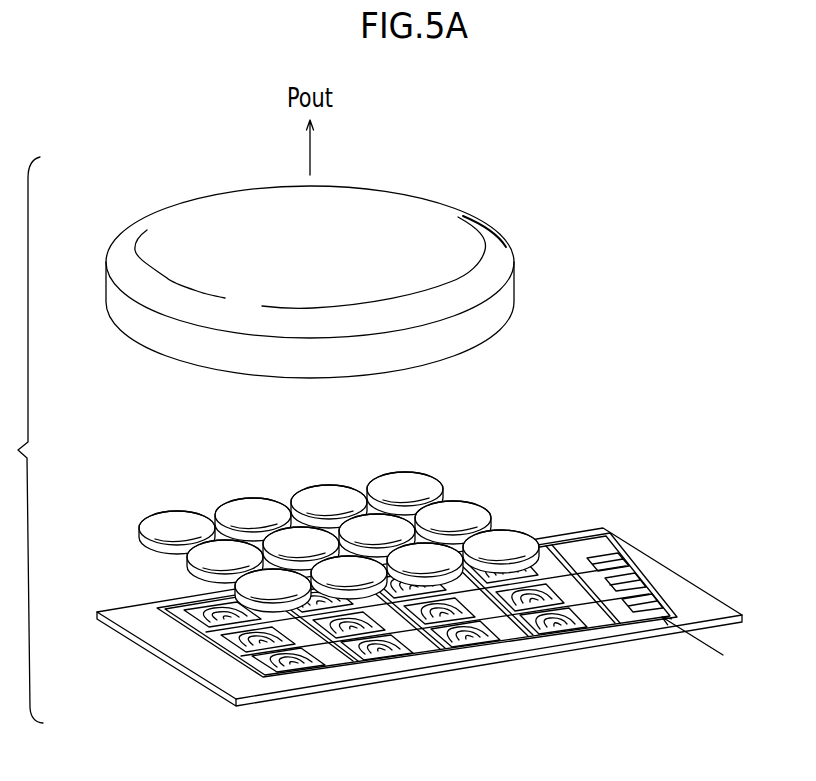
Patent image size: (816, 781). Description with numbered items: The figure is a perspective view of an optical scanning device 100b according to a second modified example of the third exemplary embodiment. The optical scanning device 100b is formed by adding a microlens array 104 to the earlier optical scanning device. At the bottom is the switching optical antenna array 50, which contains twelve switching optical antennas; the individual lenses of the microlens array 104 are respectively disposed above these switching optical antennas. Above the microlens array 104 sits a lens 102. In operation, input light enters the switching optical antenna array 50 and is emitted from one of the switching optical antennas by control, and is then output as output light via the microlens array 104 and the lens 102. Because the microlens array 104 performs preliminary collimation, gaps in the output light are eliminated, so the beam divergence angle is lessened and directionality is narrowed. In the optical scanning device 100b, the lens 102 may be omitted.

The optical scanning device 100b is at (613, 372).
The lens 102 is at (515, 277).
The microlens array 104 is at (499, 498).
The switching optical antenna array 50 is at (695, 558).